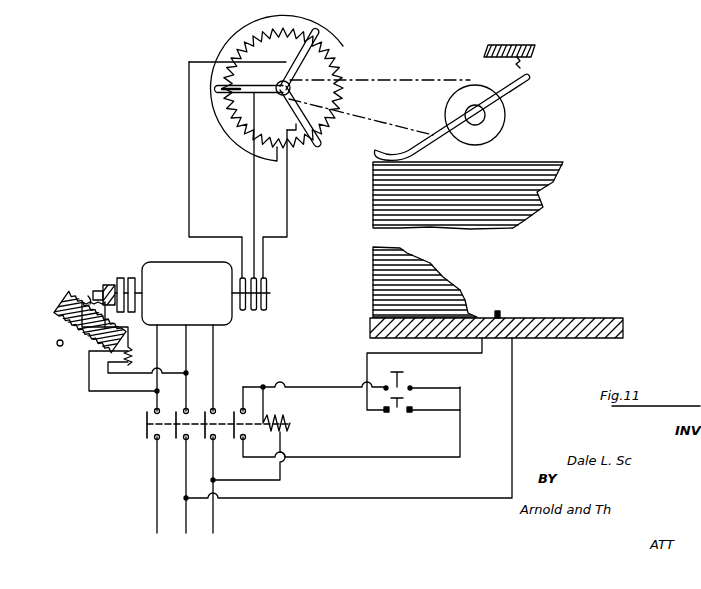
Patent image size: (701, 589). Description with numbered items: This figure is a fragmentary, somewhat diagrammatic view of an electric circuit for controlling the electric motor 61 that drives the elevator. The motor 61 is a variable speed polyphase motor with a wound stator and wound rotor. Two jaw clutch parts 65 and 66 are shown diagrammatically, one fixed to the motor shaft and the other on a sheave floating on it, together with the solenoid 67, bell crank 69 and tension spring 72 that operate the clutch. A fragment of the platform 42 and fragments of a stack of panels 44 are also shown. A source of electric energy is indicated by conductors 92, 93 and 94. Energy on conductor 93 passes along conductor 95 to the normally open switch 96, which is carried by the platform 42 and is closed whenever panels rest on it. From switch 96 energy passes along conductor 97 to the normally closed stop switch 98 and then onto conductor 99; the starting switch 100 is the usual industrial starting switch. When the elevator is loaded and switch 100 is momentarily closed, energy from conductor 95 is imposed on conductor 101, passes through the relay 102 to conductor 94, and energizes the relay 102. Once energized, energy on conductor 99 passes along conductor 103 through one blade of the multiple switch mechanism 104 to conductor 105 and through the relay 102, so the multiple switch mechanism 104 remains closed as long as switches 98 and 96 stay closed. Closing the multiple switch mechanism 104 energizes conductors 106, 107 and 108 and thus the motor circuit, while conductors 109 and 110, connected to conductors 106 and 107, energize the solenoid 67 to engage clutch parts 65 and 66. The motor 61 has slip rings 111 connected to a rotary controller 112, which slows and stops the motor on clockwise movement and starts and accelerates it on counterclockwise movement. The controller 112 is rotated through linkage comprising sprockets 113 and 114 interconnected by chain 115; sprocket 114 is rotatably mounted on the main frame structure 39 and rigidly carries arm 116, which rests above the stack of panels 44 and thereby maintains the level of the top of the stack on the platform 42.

The main frame structure 39 is at (57, 345).
The platform 42 is at (578, 320).
The stack of panels 44 is at (373, 265).
The electric motor 61 is at (217, 263).
The clutch part 65 is at (130, 278).
The clutch part 66 is at (119, 278).
The solenoid 67 is at (131, 353).
The bell crank 69 is at (93, 314).
The tension spring 72 is at (87, 296).
The conductor 92 is at (157, 509).
The conductor 93 is at (185, 525).
The conductor 94 is at (215, 514).
The conductor 95 is at (512, 423).
The normally open switch 96 is at (512, 308).
The conductor 97 is at (367, 362).
The normally closed switch 98 is at (384, 418).
The conductor 99 is at (460, 400).
The starting switch 100 is at (420, 384).
The conductor 101 is at (289, 386).
The relay 102 is at (290, 415).
The conductor 103 is at (459, 440).
The multiple switch mechanism 104 is at (145, 437).
The conductor 105 is at (244, 386).
The conductor 106 is at (158, 355).
The conductor 107 is at (187, 355).
The conductor 108 is at (215, 360).
The conductor 109 is at (92, 392).
The conductor 110 is at (140, 391).
The slip rings 111 is at (272, 296).
The controller 112 is at (233, 150).
The sprocket 113 is at (276, 82).
The sprocket 114 is at (503, 115).
The chain 115 is at (405, 80).
The arm 116 is at (443, 130).